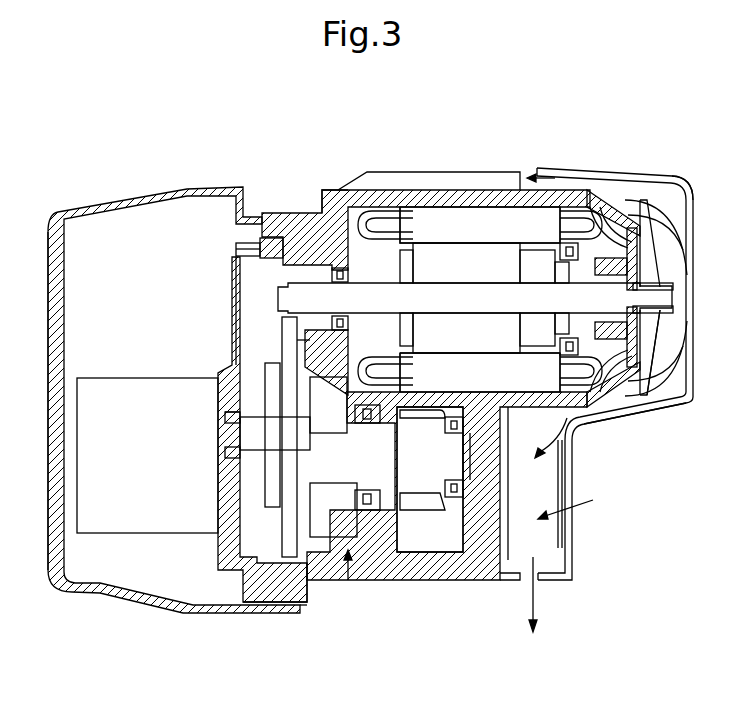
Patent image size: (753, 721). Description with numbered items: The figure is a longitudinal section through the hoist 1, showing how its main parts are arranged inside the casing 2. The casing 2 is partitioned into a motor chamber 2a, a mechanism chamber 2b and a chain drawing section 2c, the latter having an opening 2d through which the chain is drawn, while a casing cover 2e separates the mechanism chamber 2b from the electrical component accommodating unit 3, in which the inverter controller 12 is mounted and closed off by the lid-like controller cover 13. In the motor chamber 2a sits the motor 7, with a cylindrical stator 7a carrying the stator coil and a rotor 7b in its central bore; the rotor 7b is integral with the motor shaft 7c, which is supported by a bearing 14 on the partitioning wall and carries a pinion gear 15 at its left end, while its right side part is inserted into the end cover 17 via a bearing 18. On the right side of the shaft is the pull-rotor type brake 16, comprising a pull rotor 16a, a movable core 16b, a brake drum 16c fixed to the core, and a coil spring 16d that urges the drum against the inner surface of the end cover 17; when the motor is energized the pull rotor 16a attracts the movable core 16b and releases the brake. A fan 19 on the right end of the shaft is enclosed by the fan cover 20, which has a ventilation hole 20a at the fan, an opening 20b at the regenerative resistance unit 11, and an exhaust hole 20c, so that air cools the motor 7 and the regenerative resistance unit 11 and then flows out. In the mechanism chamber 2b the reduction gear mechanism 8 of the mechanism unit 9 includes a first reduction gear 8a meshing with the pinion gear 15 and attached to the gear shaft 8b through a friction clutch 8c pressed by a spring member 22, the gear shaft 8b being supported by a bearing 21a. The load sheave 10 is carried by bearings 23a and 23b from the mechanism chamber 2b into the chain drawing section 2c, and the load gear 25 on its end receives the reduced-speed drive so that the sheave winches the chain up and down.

The hoist 1 is at (257, 704).
The casing 2 is at (323, 189).
The motor chamber 2a is at (350, 222).
The mechanism chamber 2b is at (325, 585).
The chain drawing section 2c is at (440, 482).
The opening 2d is at (430, 542).
The casing cover 2e is at (236, 295).
The electrical component accommodating unit 3 is at (155, 186).
The motor 7 is at (385, 238).
The stator 7a is at (480, 213).
The rotor 7b is at (452, 253).
The motor shaft 7c is at (423, 297).
The reduction gear mechanism 8 is at (259, 520).
The first reduction gear 8a is at (277, 338).
The gear shaft 8b is at (228, 448).
The friction clutch 8c is at (313, 600).
The mechanism unit 9 is at (380, 500).
The load sheave 10 is at (487, 497).
The regenerative resistance unit 11 is at (515, 533).
The inverter controller 12 is at (132, 518).
The controller cover 13 is at (48, 247).
The bearing 14 is at (340, 268).
The pinion gear 15 is at (272, 245).
The brake 16 is at (662, 262).
The pull rotor 16a is at (530, 250).
The movable core 16b is at (568, 240).
The brake drum 16c is at (650, 212).
The coil spring 16d is at (650, 337).
The end cover 17 is at (655, 240).
The fan hub plate 18 is at (667, 310).
The fan 19 is at (663, 368).
The fan cover 20 is at (693, 278).
The ventilation hole 20a is at (694, 212).
The opening 20b is at (562, 470).
The exhaust hole 20c is at (538, 578).
The bearing 21a is at (213, 473).
The spring member 22 is at (225, 410).
The bearing 23a is at (365, 423).
The bearing 23b is at (458, 487).
The load gear 25 is at (365, 503).